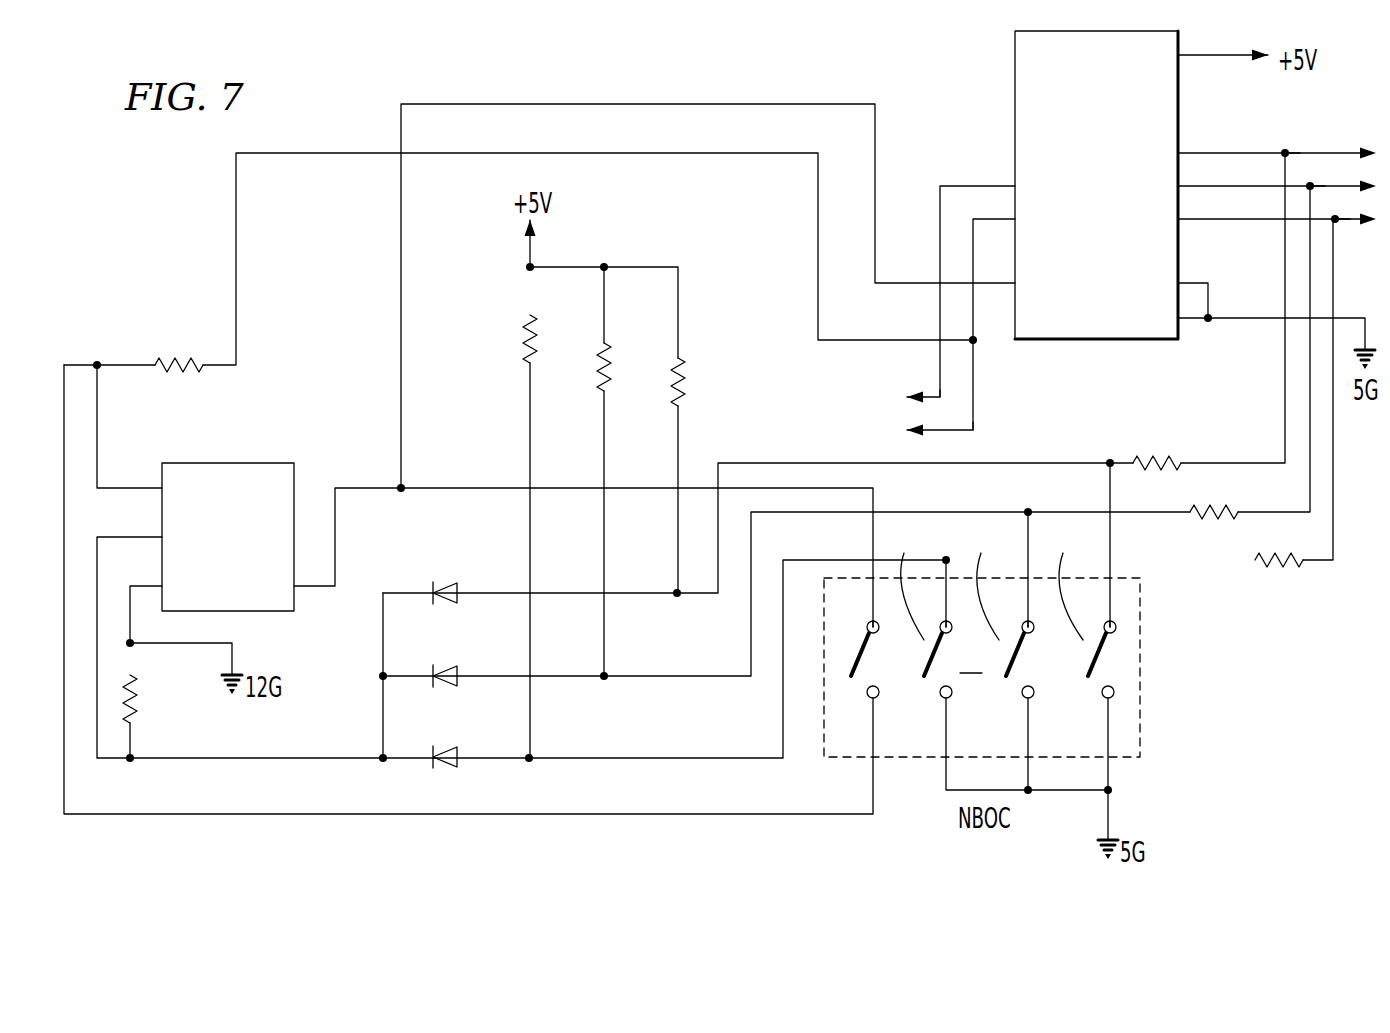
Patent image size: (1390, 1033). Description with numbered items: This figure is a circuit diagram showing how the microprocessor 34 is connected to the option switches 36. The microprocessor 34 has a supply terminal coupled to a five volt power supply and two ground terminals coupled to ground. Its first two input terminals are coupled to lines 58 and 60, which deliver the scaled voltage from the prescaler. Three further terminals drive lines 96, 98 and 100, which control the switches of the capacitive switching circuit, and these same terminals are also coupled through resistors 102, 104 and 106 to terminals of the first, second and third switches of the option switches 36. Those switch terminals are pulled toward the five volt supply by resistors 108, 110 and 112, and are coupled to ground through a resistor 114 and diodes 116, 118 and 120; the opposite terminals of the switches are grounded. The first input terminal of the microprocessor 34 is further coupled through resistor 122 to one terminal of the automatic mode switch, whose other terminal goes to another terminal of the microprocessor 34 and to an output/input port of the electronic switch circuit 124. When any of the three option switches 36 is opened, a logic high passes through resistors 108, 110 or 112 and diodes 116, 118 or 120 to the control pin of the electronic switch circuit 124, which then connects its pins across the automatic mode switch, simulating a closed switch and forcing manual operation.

The microprocessor 34 is at (1002, 127).
The option switches 36 is at (1150, 722).
The line 58 is at (975, 403).
The line 60 is at (938, 375).
The line 96 is at (1345, 222).
The line 98 is at (1327, 184).
The line 100 is at (1338, 152).
The resistor 102 is at (1260, 568).
The resistor 104 is at (1192, 525).
The resistor 106 is at (1135, 470).
The resistor 108 is at (527, 355).
The resistor 110 is at (604, 388).
The resistor 112 is at (682, 356).
The resistor 114 is at (134, 725).
The diode 116 is at (456, 765).
The diode 118 is at (456, 684).
The diode 120 is at (456, 600).
The resistor 122 is at (204, 373).
The electronic switch circuit 124 is at (294, 475).